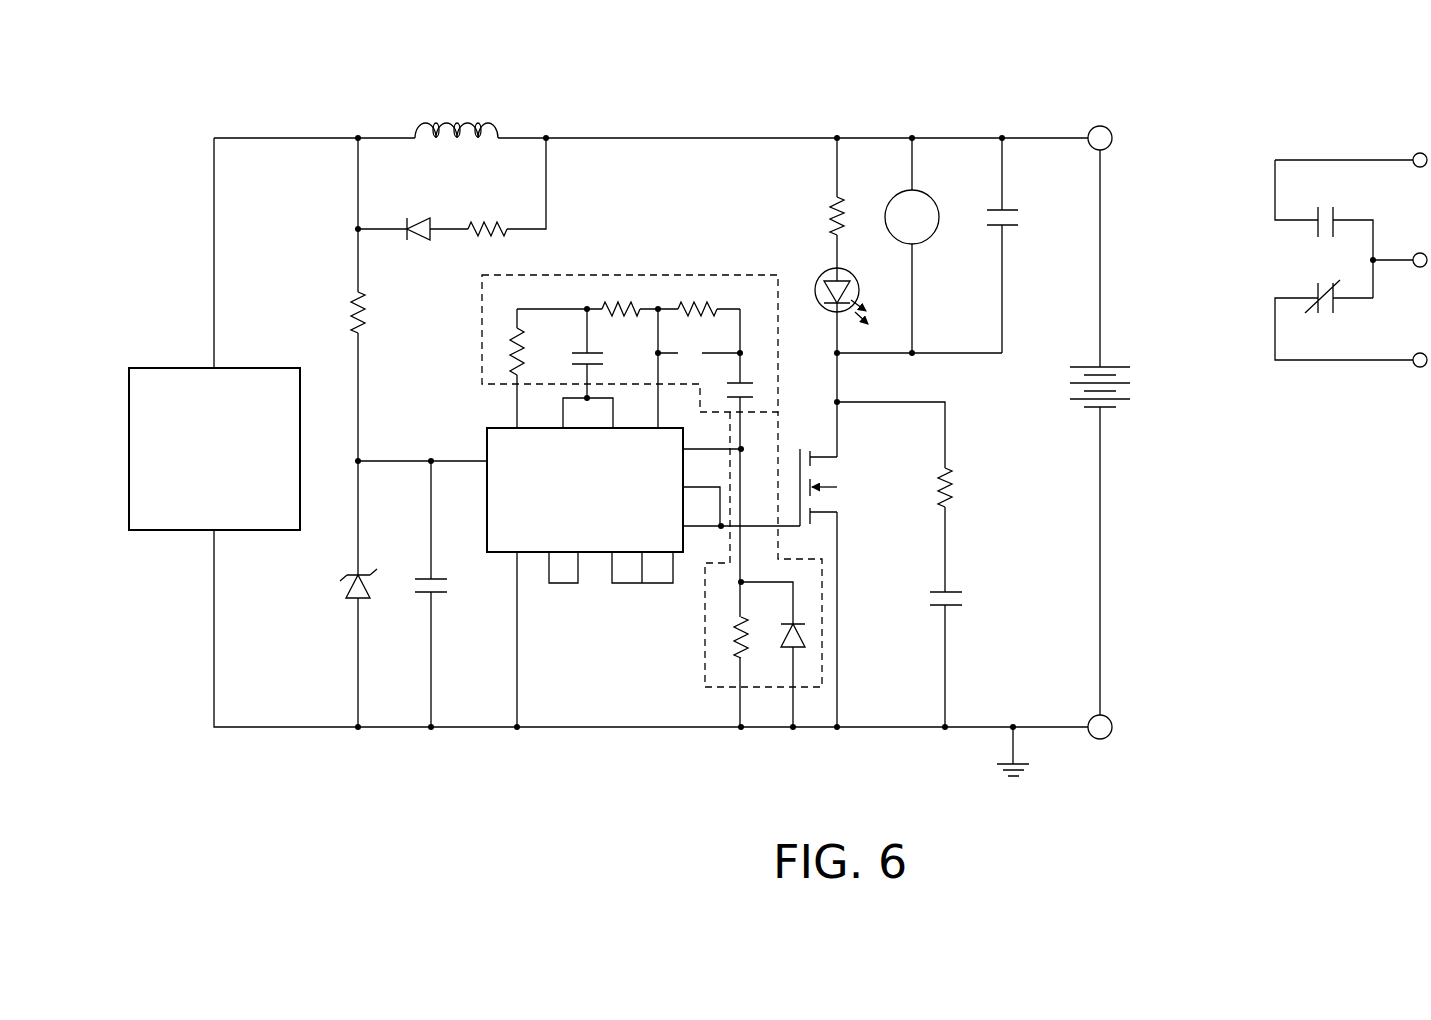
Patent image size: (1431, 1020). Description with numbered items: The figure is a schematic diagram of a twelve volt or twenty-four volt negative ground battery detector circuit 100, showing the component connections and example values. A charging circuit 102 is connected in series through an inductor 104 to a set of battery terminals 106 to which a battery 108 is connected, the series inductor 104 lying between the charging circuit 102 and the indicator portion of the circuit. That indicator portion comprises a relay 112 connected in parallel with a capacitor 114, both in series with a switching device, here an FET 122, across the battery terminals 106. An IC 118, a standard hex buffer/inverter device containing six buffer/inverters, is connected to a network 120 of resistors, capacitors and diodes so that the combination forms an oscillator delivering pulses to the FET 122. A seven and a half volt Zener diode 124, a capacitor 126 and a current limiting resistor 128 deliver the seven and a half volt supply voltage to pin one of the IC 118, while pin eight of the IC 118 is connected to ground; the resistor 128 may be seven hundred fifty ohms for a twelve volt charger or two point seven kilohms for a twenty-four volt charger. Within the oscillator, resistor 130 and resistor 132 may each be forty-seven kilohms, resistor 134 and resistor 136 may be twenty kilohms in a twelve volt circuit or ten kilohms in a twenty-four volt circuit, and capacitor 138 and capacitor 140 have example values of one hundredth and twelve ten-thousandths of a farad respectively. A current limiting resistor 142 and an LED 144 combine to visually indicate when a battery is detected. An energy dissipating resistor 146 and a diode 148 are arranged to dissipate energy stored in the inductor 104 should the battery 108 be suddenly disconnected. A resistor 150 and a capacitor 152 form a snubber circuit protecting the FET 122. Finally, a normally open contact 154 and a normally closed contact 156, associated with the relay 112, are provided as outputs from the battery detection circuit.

The circuit 100 is at (670, 92).
The charging circuit 102 is at (178, 365).
The inductor 104 is at (438, 117).
The battery terminals 106 is at (1112, 128).
The battery 108 is at (1140, 388).
The relay 112 is at (940, 208).
The capacitor 114 is at (1022, 218).
The IC 118 is at (525, 450).
The network 120 is at (690, 262).
The FET 122 is at (833, 475).
The Zener diode 124 is at (340, 597).
The capacitor 126 is at (440, 597).
The current limiting resistor 128 is at (347, 318).
The resistor 130 is at (505, 345).
The resistor 132 is at (618, 292).
The resistor 134 is at (708, 290).
The resistor 136 is at (730, 638).
The capacitor 138 is at (578, 340).
The capacitor 140 is at (755, 392).
The current limiting resistor 142 is at (848, 205).
The LED 144 is at (889, 276).
The energy dissipating resistor 146 is at (486, 215).
The diode 148 is at (420, 243).
The resistor 150 is at (963, 492).
The capacitor 152 is at (958, 585).
The normally open contact 154 is at (1315, 237).
The normally closed contact 156 is at (1310, 290).